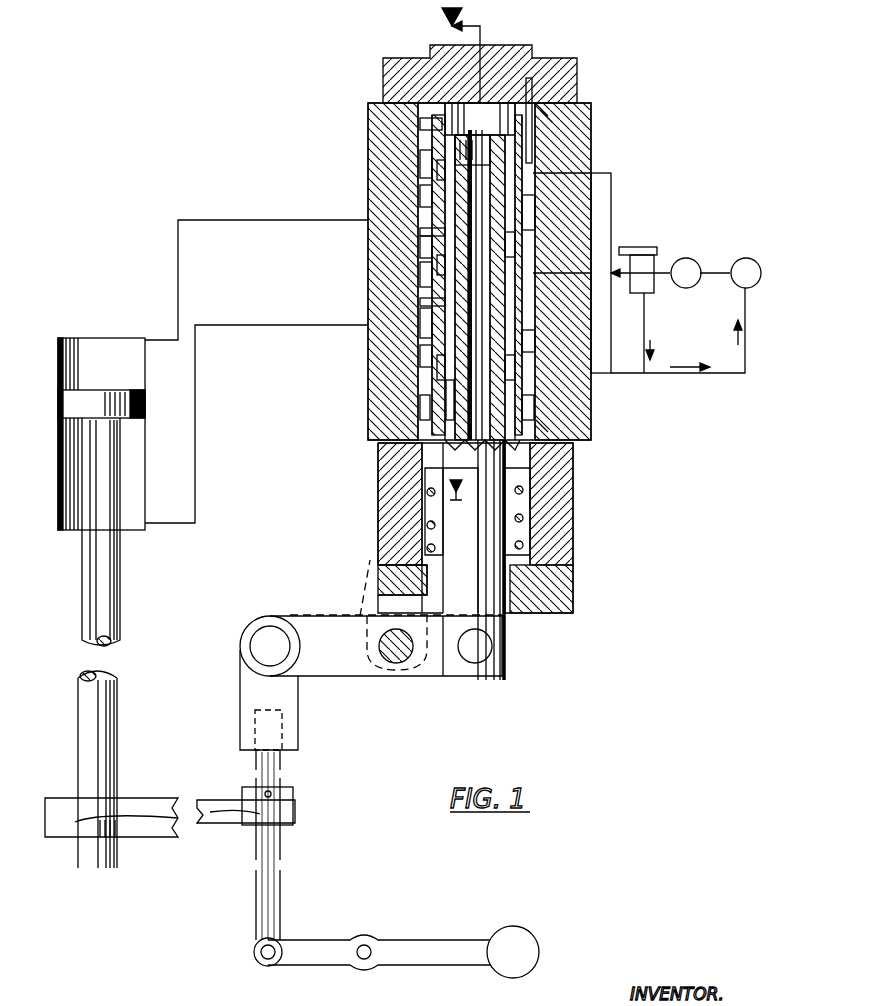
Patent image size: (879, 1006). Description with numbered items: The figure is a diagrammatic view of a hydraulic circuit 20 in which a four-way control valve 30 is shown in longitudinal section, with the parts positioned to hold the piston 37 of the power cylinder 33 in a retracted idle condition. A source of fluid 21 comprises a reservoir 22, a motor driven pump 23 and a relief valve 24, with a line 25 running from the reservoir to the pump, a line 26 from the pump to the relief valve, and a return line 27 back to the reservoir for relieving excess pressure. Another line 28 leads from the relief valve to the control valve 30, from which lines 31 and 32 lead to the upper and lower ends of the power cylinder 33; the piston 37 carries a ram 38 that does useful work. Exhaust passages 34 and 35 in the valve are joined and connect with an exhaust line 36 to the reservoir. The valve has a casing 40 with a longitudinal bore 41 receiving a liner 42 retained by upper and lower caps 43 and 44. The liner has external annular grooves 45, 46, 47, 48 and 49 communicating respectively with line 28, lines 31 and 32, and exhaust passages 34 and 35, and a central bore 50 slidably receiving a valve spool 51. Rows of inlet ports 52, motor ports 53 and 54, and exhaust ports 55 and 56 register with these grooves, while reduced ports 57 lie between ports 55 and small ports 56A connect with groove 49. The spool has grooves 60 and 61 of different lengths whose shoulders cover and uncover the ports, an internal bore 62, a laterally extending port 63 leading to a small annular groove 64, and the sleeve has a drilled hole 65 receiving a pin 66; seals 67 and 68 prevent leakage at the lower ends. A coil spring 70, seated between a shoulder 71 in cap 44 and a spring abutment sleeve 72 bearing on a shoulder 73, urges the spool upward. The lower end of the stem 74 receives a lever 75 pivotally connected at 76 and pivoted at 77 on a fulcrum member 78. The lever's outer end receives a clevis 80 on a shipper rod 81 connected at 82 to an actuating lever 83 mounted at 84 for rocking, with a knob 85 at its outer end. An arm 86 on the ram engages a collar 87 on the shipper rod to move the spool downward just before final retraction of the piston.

The hydraulic circuit 20 is at (644, 163).
The source of fluid 21 is at (719, 223).
The reservoir 22 is at (744, 258).
The motor driven pump 23 is at (688, 258).
The relief valve 24 is at (650, 238).
The line 25 is at (710, 270).
The line 26 is at (660, 270).
The return line 27 is at (644, 345).
The line 28 is at (626, 273).
The four-way control valve 30 is at (613, 125).
The line 31 is at (262, 220).
The line 32 is at (272, 325).
The power cylinder 33 is at (68, 410).
The exhaust passage 34 is at (596, 173).
The exhaust passage 35 is at (594, 385).
The exhaust line 36 is at (630, 373).
The piston 37 is at (58, 465).
The ram 38 is at (104, 615).
The casing 40 is at (368, 160).
The longitudinal bore 41 is at (536, 215).
The liner 42 is at (430, 110).
The cap 43 is at (405, 70).
The cap 44 is at (385, 487).
The external annular groove 45 is at (420, 280).
The external annular groove 46 is at (420, 248).
The external annular groove 47 is at (420, 325).
The external annular groove 48 is at (437, 170).
The external annular groove 49 is at (437, 375).
The central bore 50 is at (420, 125).
The valve spool 51 is at (455, 452).
The inlet ports 52 is at (437, 265).
The motor ports 53 is at (420, 232).
The motor ports 54 is at (420, 303).
The exhaust ports 55 is at (420, 160).
The exhaust ports 56 is at (420, 358).
The small ports 56A is at (420, 403).
The reduced ports 57 is at (420, 195).
The groove 60 is at (530, 345).
The groove 61 is at (515, 245).
The internal bore 62 is at (476, 103).
The laterally extending port 63 is at (450, 385).
The small annular groove 64 is at (515, 370).
The drilled hole 65 is at (552, 125).
The pin 66 is at (533, 80).
The seal 67 is at (534, 418).
The seal 68 is at (548, 430).
The coil spring 70 is at (525, 518).
The shoulder 71 is at (525, 548).
The spring abutment sleeve 72 is at (525, 478).
The shoulder 73 is at (480, 490).
The stem 74 is at (460, 505).
The lever 75 is at (432, 665).
The pivotal connection 76 is at (480, 648).
The pivot 77 is at (392, 660).
The fulcrum member 78 is at (378, 575).
The clevis 80 is at (298, 710).
The shipper rod 81 is at (280, 872).
The connection 82 is at (272, 952).
The actuating lever 83 is at (412, 940).
The mounting 84 is at (366, 948).
The knob 85 is at (514, 926).
The arm 86 is at (143, 798).
The collar 87 is at (290, 793).